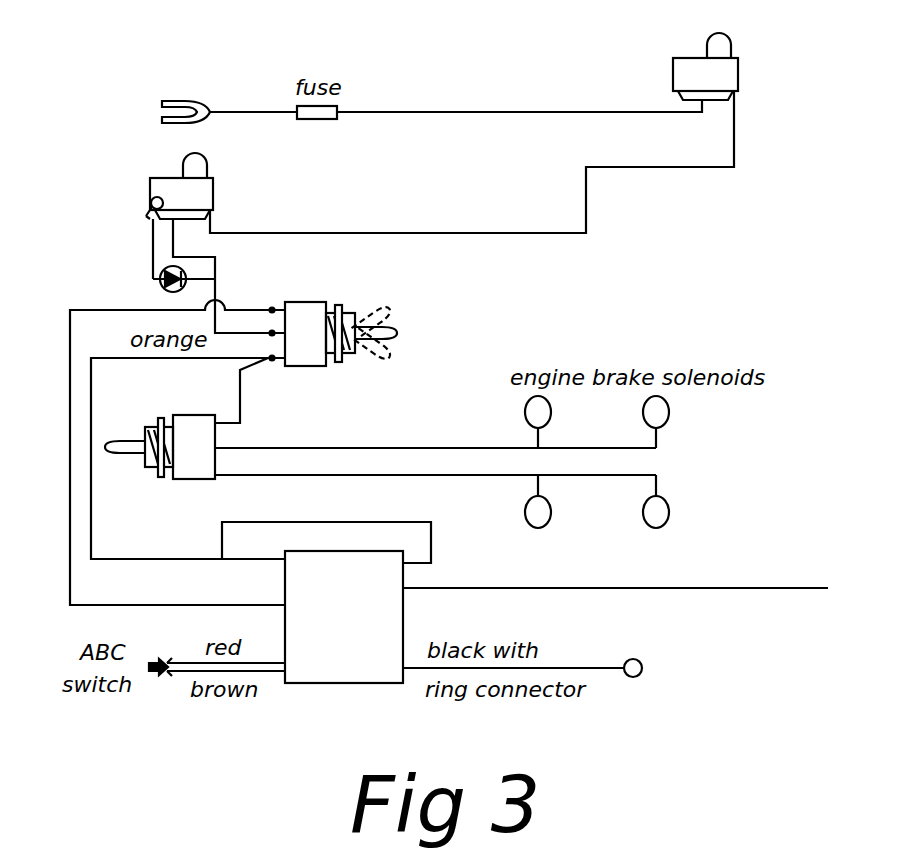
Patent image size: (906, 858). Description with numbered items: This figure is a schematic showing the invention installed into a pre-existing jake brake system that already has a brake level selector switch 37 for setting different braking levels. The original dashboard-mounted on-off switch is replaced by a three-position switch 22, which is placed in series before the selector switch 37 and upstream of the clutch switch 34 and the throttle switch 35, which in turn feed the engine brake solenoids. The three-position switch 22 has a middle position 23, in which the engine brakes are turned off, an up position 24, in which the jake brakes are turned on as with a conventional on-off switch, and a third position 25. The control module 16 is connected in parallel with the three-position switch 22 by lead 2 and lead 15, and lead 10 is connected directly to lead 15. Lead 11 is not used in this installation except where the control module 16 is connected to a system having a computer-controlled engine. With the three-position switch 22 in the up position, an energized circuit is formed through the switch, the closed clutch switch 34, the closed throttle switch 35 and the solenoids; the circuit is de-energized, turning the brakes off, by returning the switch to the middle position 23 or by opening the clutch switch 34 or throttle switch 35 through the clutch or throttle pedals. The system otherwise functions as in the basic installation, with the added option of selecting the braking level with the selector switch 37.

The lead 2 is at (70, 528).
The lead 10 is at (428, 520).
The lead 11 is at (615, 588).
The lead 15 is at (135, 563).
The control module 16 is at (325, 685).
The three-position switch 22 is at (368, 327).
The middle position 23 is at (397, 333).
The up position 24 is at (392, 303).
The kit switch lower position 25 is at (392, 362).
The clutch switch 34 is at (513, 116).
The throttle switch 35 is at (229, 243).
The selector switch 37 is at (180, 415).